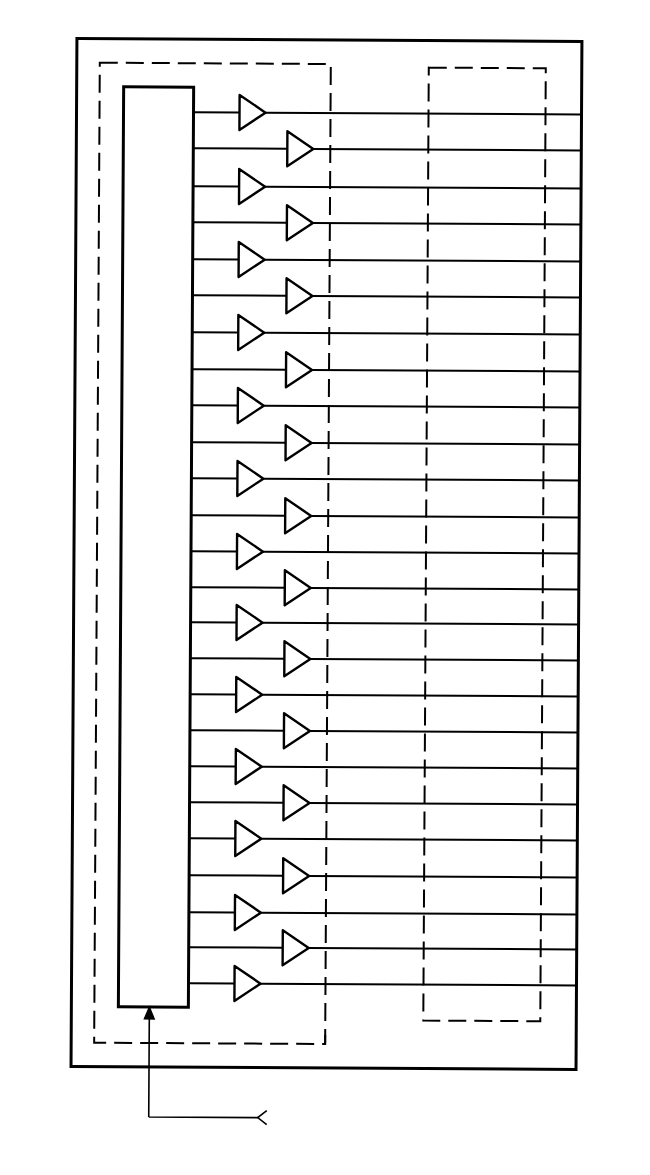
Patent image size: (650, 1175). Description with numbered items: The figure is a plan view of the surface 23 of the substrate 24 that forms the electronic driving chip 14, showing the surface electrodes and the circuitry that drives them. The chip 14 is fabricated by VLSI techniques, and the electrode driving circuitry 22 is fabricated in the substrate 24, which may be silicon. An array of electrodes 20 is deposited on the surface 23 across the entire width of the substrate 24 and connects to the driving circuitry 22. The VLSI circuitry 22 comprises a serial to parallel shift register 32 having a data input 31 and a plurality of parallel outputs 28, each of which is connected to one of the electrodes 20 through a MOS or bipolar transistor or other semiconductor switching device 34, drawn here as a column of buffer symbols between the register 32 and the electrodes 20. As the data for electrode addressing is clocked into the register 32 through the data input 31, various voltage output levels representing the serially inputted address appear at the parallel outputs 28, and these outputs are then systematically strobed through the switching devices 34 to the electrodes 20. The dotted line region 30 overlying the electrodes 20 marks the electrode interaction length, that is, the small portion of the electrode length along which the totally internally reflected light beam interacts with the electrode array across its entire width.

The electronic driving chip 14 is at (506, 40).
The electrodes 20 is at (392, 113).
The electrode driving circuitry 22 is at (317, 1020).
The surface 23 is at (381, 50).
The substrate 24 is at (283, 63).
The parallel outputs 28 is at (218, 113).
The dotted line region 30 is at (464, 1021).
The data input 31 is at (154, 1093).
The register 32 is at (132, 602).
The semiconductor switching device 34 is at (268, 108).